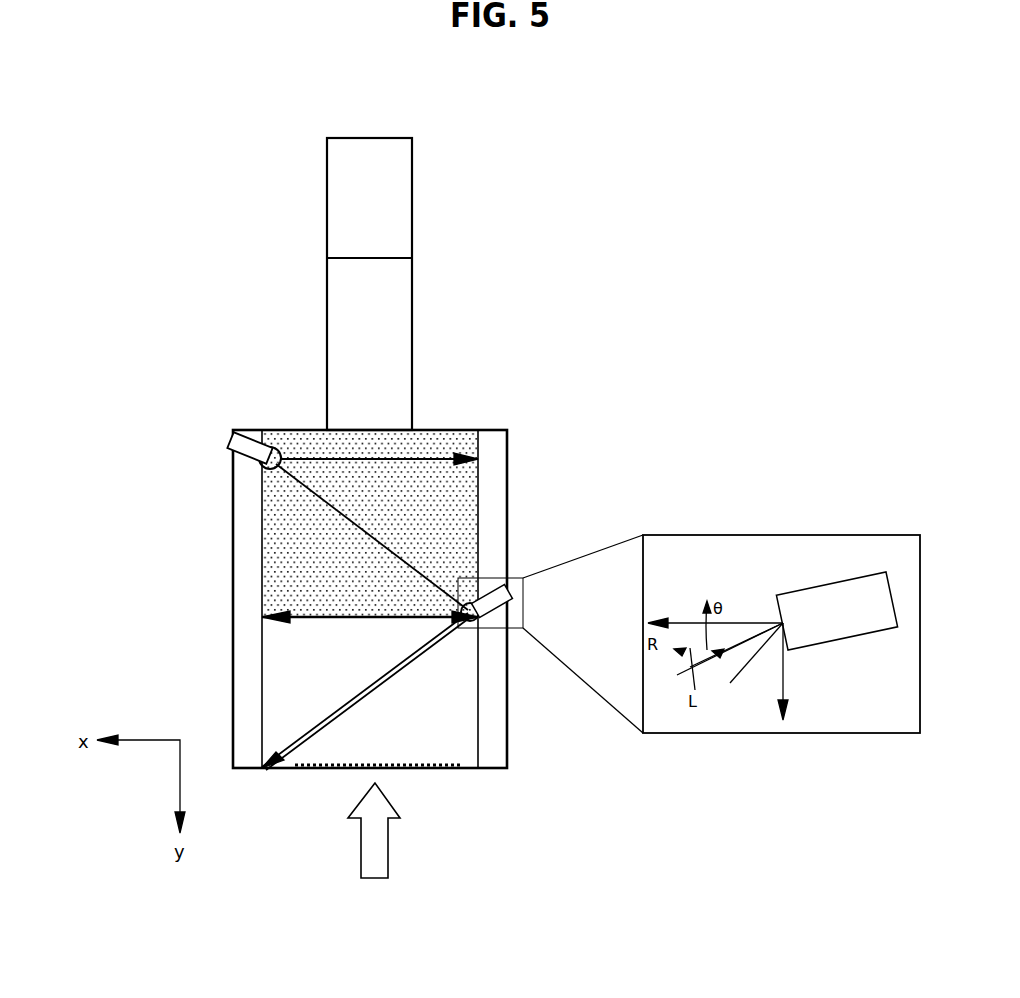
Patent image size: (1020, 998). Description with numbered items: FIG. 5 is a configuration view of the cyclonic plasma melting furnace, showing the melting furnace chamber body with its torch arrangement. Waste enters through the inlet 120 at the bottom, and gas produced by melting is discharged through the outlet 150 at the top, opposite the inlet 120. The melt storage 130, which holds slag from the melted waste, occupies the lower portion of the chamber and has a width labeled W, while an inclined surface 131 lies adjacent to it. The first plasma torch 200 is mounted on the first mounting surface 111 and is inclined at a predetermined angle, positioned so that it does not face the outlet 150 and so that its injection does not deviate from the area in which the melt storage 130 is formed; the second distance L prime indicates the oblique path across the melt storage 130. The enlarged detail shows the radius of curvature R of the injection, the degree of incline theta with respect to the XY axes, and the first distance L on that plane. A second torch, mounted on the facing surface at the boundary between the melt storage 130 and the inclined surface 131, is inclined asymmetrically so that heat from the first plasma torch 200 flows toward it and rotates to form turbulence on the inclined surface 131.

The first mounting surface 111 is at (233, 653).
The inlet 120 is at (357, 769).
The melt storage 130 is at (470, 538).
The inclined surface 131 is at (460, 695).
The outlet 150 is at (388, 140).
The first plasma torch 200 is at (253, 436).